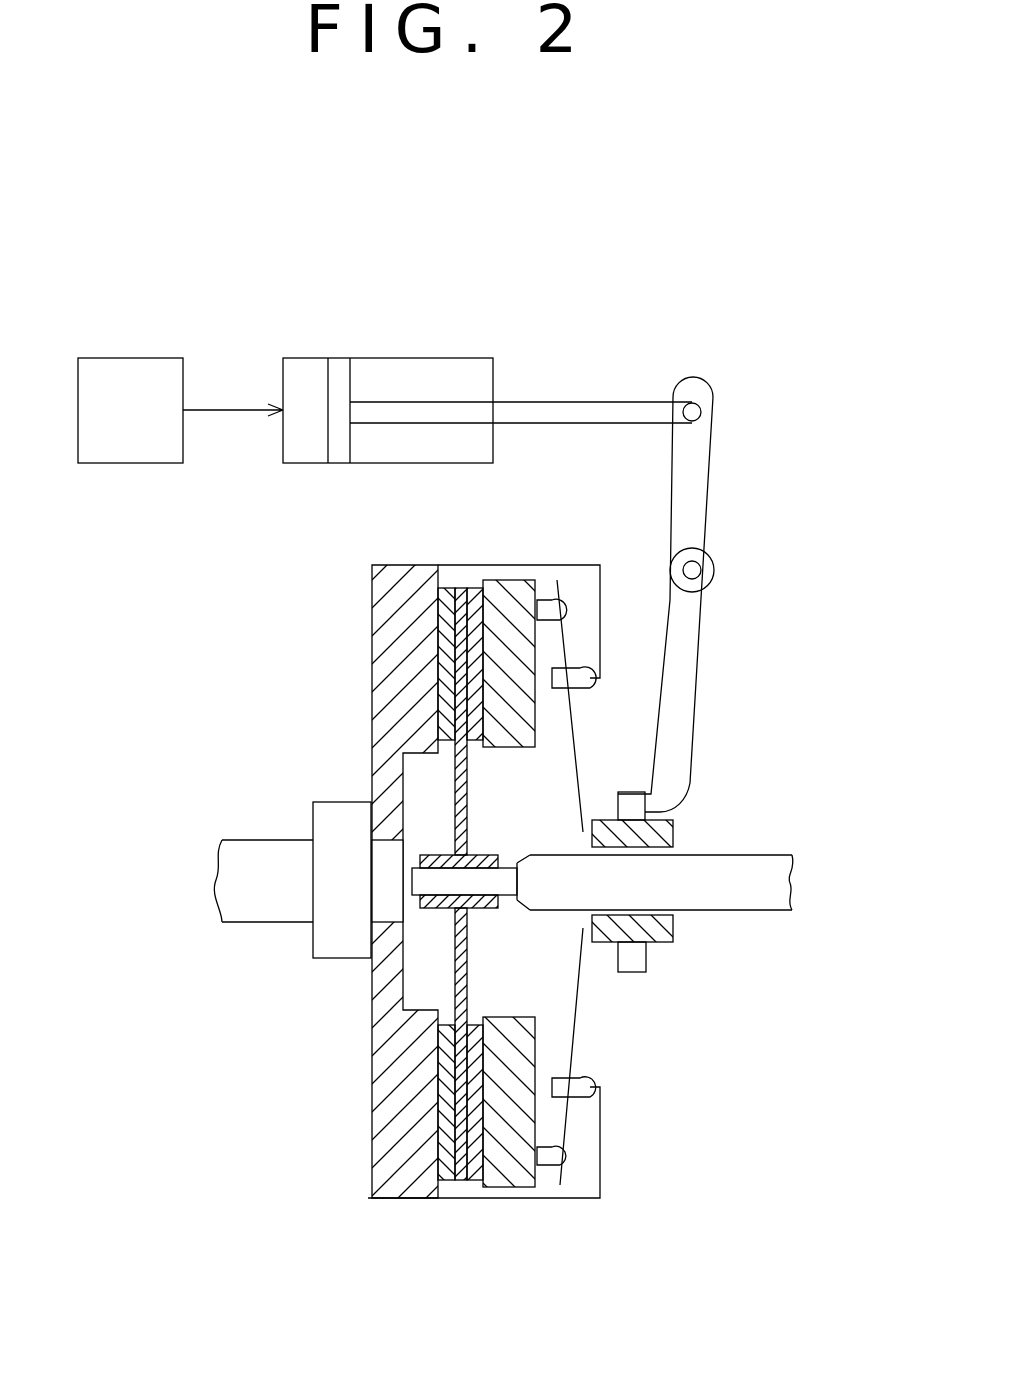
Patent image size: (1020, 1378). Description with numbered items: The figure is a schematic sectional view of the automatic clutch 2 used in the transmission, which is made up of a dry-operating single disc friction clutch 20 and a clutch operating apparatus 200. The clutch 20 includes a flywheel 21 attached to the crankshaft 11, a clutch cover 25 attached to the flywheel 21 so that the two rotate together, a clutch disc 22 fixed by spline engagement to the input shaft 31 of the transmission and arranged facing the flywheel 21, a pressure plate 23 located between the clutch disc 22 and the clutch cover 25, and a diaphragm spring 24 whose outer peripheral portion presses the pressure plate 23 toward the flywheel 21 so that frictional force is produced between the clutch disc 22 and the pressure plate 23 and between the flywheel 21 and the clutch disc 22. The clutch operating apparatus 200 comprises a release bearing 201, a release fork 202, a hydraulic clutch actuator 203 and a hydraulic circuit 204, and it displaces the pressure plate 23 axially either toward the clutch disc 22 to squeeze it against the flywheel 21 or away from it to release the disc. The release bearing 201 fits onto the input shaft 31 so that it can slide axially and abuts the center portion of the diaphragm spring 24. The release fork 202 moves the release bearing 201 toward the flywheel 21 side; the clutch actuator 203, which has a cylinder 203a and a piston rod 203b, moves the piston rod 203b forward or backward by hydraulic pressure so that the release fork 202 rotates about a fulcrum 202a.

The automatic clutch 2 is at (742, 360).
The crankshaft 11 is at (272, 922).
The clutch 20 is at (360, 1113).
The flywheel 21 is at (408, 1190).
The clutch disc 22 is at (460, 1180).
The pressure plate 23 is at (520, 1170).
The diaphragm spring 24 is at (575, 1033).
The clutch cover 25 is at (583, 1200).
The input shaft 31 is at (742, 853).
The clutch operating apparatus 200 is at (643, 362).
The release bearing 201 is at (663, 945).
The release fork 202 is at (698, 700).
The fulcrum 202a is at (700, 568).
The hydraulic clutch actuator 203 is at (405, 348).
The cylinder 203a is at (308, 357).
The piston rod 203b is at (543, 415).
The hydraulic circuit 204 is at (138, 357).